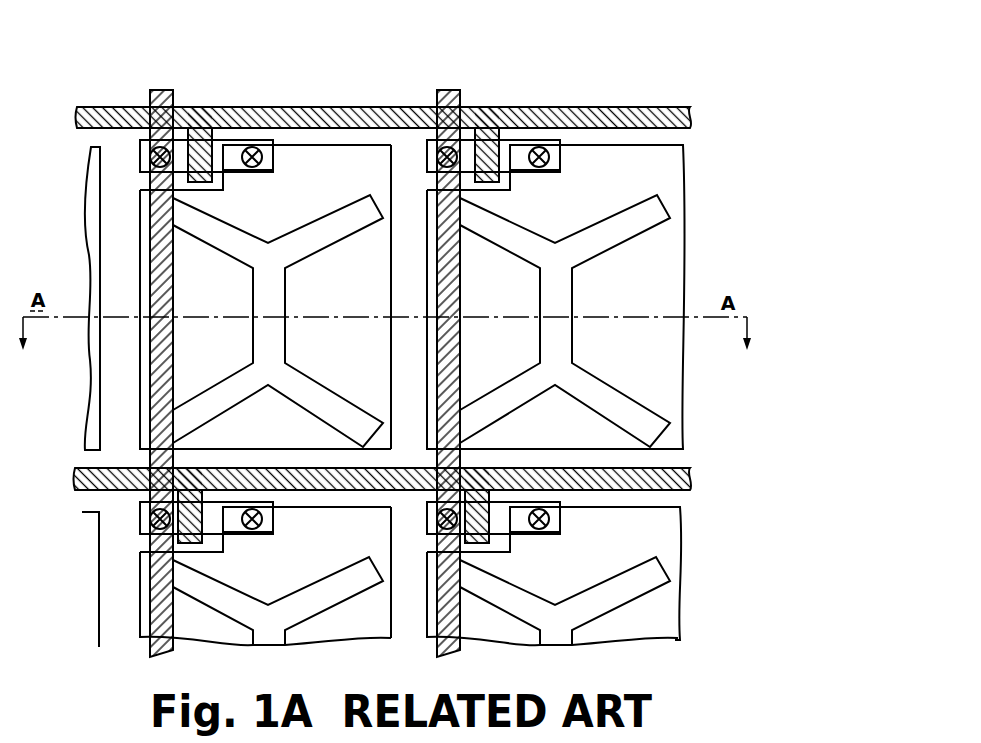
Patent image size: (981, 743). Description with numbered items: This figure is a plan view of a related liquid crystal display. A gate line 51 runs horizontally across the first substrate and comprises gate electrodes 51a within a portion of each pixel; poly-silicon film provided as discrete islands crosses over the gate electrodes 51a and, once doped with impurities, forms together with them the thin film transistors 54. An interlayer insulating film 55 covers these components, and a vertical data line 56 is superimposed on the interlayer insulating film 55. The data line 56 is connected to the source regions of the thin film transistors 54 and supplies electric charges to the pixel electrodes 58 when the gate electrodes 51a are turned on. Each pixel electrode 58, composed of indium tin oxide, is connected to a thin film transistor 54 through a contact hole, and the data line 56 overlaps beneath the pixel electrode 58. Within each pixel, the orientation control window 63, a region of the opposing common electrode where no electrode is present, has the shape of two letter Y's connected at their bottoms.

The gate line 51 is at (690, 118).
The gate electrode 51a is at (200, 130).
The thin film transistor 54 is at (232, 100).
The interlayer insulating film 55 is at (384, 162).
The data line 56 is at (165, 90).
The pixel electrode 58 is at (140, 366).
The orientation control window 63 is at (625, 250).